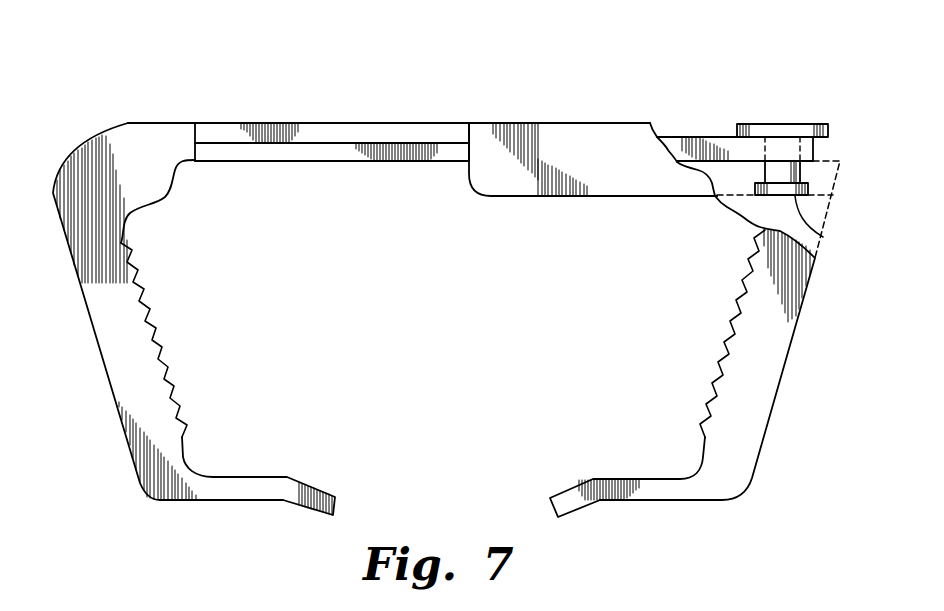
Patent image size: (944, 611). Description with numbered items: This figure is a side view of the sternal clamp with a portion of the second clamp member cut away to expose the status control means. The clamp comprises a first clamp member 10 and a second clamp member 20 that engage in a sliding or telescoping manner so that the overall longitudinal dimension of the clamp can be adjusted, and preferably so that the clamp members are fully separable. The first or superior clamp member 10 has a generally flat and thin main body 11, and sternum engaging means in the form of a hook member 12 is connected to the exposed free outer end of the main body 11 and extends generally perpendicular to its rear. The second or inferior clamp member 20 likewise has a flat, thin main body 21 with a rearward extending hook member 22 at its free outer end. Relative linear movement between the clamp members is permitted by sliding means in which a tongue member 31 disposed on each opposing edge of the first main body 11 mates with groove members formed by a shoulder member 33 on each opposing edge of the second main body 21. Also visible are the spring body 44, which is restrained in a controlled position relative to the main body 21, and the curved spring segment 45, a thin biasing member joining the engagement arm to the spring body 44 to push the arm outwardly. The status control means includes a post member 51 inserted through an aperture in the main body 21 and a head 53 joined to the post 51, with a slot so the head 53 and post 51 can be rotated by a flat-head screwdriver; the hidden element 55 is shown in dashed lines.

The first clamp member 10 is at (217, 217).
The main body 11 is at (317, 123).
The hook member 12 is at (183, 458).
The second clamp member 20 is at (708, 272).
The main body 21 is at (668, 197).
The hook member 22 is at (692, 470).
The tongue member 31 is at (323, 152).
The shoulder member 33 is at (565, 123).
The spring body 44 is at (710, 137).
The spring segment 45 is at (817, 147).
The post member 51 is at (806, 170).
The head 53 is at (803, 124).
The wedge (hidden) 55 is at (823, 232).